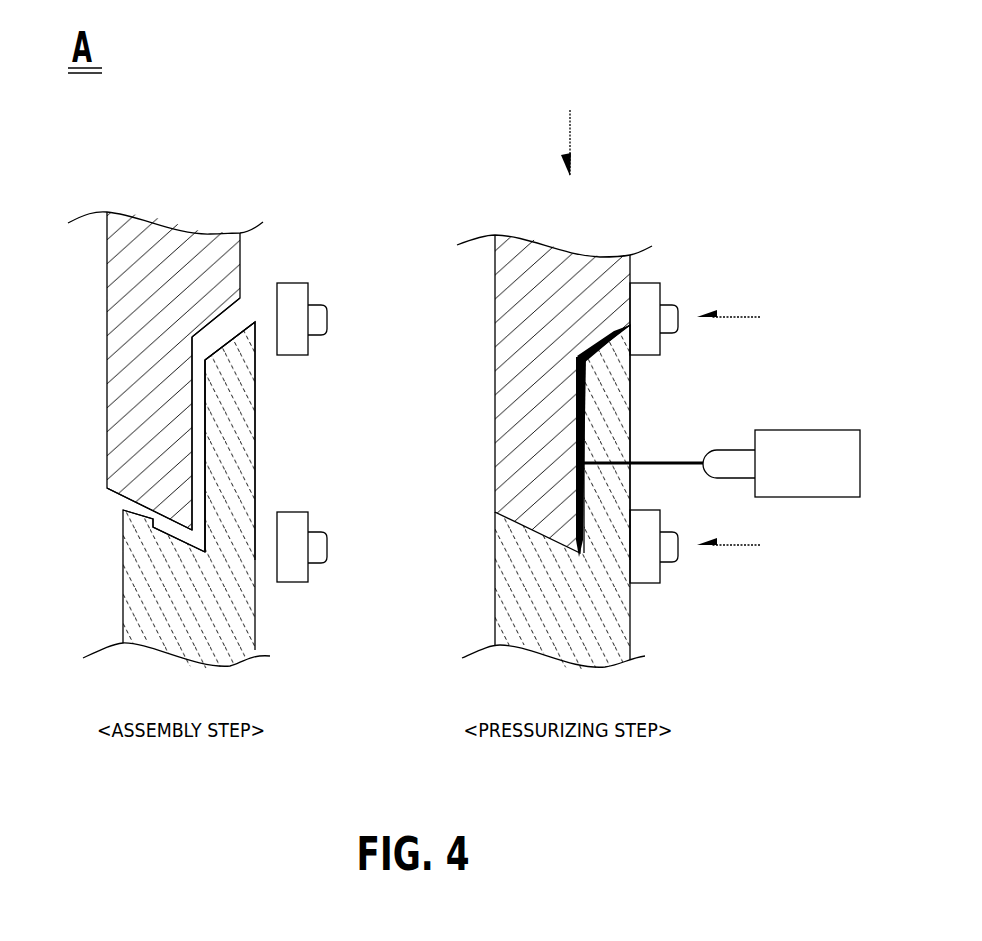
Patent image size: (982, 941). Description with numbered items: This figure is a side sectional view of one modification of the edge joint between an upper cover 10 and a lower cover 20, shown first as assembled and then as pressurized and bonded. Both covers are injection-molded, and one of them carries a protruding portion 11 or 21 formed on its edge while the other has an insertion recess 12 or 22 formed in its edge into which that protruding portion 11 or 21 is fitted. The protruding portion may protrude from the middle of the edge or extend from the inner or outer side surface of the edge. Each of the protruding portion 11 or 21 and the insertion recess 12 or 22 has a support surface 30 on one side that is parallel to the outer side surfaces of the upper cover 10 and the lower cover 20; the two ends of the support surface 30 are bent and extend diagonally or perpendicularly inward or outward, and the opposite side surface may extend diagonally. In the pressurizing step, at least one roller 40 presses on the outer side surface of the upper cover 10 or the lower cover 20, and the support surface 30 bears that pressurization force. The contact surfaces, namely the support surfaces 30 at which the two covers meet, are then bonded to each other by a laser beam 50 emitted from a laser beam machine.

The upper cover 10 is at (83, 351).
The protruding portion 11 is at (122, 463).
The insertion recess 12 is at (226, 336).
The lower cover 20 is at (83, 585).
The protruding portion 21 is at (247, 438).
The insertion recess 22 is at (152, 519).
The support surface 30 is at (192, 452).
The roller 40 is at (292, 284).
The laser beam 50 is at (670, 462).